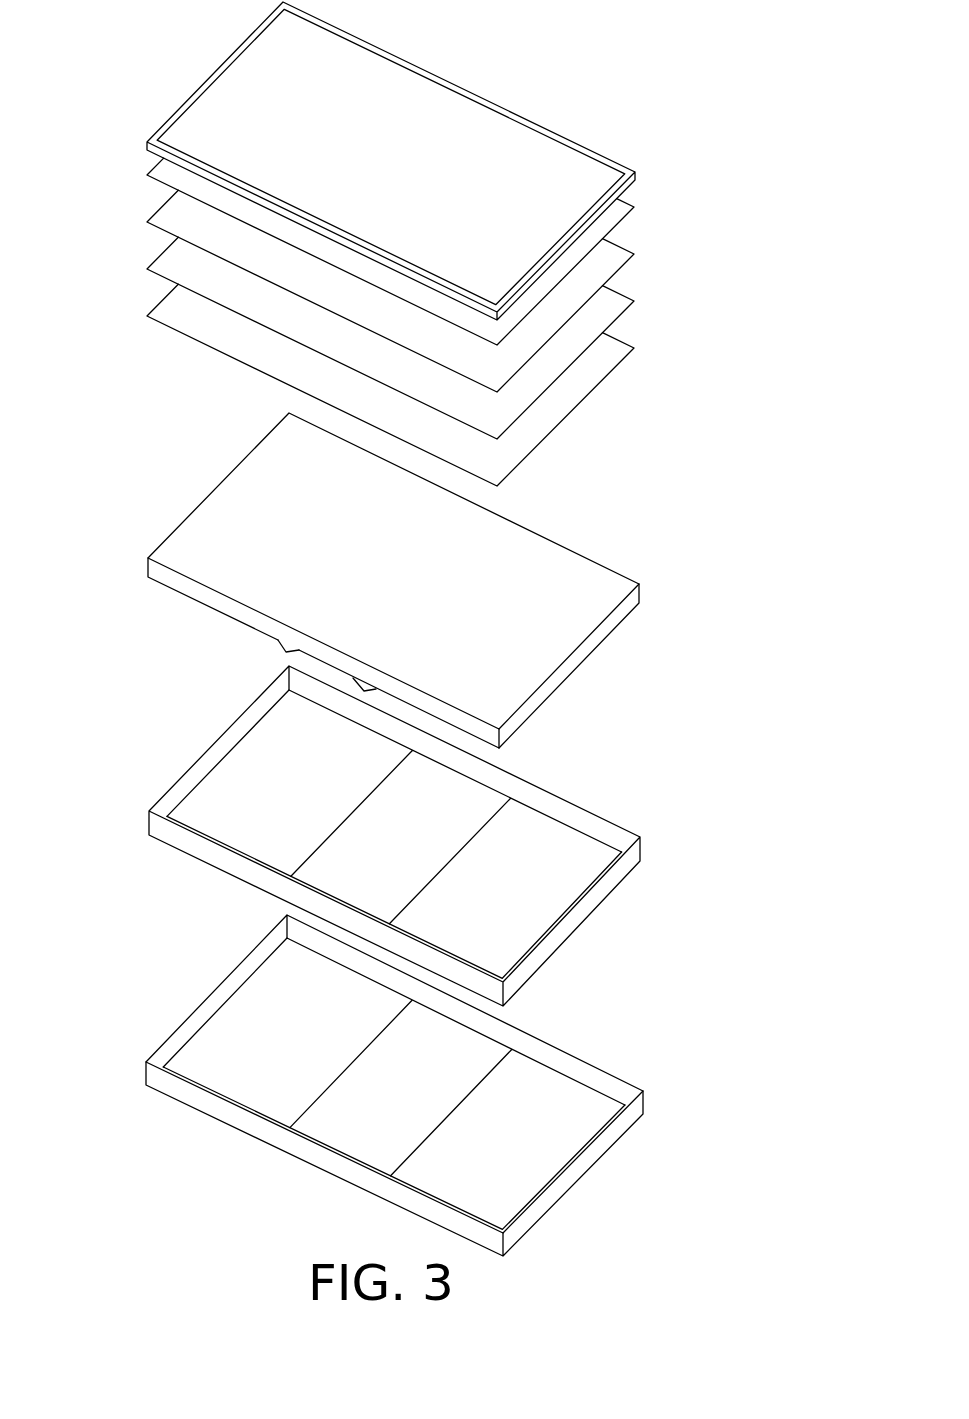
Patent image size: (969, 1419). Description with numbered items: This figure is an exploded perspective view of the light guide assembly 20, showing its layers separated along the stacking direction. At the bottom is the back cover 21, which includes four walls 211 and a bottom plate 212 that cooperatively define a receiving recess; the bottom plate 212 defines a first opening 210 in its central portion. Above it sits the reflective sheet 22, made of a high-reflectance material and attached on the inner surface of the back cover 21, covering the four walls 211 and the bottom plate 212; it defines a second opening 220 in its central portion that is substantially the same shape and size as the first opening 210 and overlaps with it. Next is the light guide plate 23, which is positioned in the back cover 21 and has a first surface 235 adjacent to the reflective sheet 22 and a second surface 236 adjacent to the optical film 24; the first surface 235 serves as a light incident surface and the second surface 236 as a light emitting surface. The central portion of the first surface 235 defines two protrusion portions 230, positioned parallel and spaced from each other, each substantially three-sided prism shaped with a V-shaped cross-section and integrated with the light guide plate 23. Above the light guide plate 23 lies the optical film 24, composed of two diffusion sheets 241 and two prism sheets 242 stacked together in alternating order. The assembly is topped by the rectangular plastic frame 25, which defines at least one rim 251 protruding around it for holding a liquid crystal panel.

The light guide assembly 20 is at (82, 1165).
The back cover 21 is at (419, 1085).
The first opening 210 is at (360, 1128).
The walls 211 is at (202, 1098).
The bottom plate 212 is at (590, 1170).
The reflective sheet 22 is at (430, 836).
The second opening 220 is at (457, 808).
The light guide plate 23 is at (427, 580).
The protrusion portions 230 is at (287, 647).
The first surface 235 is at (597, 653).
The second surface 236 is at (563, 593).
The optical film 24 is at (446, 322).
The diffusion sheets 241 is at (612, 260).
The prism sheets 242 is at (622, 213).
The plastic frame 25 is at (410, 161).
The rim 251 is at (338, 33).